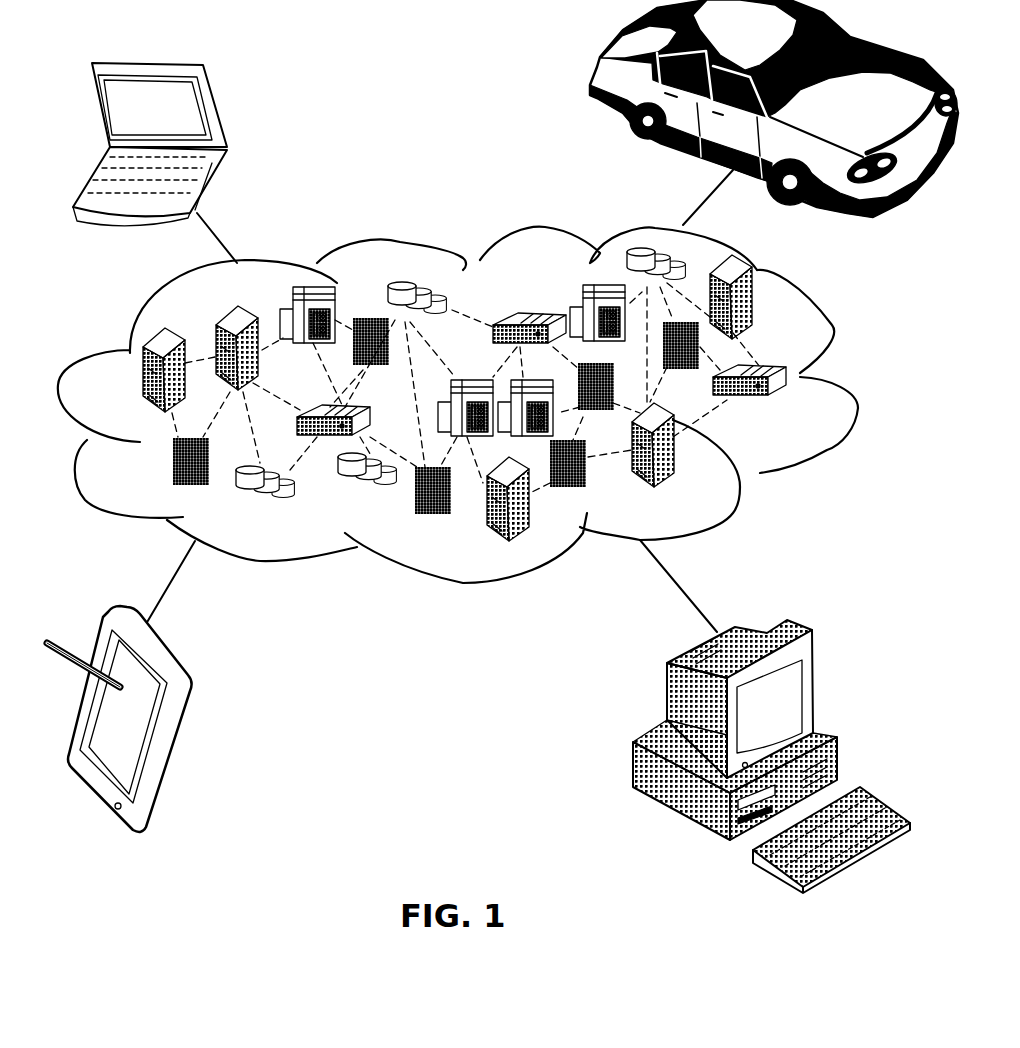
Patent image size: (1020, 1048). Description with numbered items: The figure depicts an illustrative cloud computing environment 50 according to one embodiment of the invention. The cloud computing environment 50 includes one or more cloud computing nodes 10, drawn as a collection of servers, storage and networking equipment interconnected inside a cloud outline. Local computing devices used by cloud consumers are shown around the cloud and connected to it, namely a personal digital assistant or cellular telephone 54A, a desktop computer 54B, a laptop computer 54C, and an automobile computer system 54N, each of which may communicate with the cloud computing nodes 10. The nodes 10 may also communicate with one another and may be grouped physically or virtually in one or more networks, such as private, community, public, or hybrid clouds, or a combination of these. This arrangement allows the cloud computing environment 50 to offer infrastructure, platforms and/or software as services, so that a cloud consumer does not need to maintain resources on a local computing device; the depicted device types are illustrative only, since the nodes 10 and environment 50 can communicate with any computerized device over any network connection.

The cloud computing node 10 is at (800, 412).
The cloud computing environment 50 is at (848, 380).
The personal digital assistant or cellular telephone 54A is at (183, 710).
The desktop computer 54B is at (783, 623).
The laptop computer 54C is at (217, 112).
The automobile computer system 54N is at (593, 80).